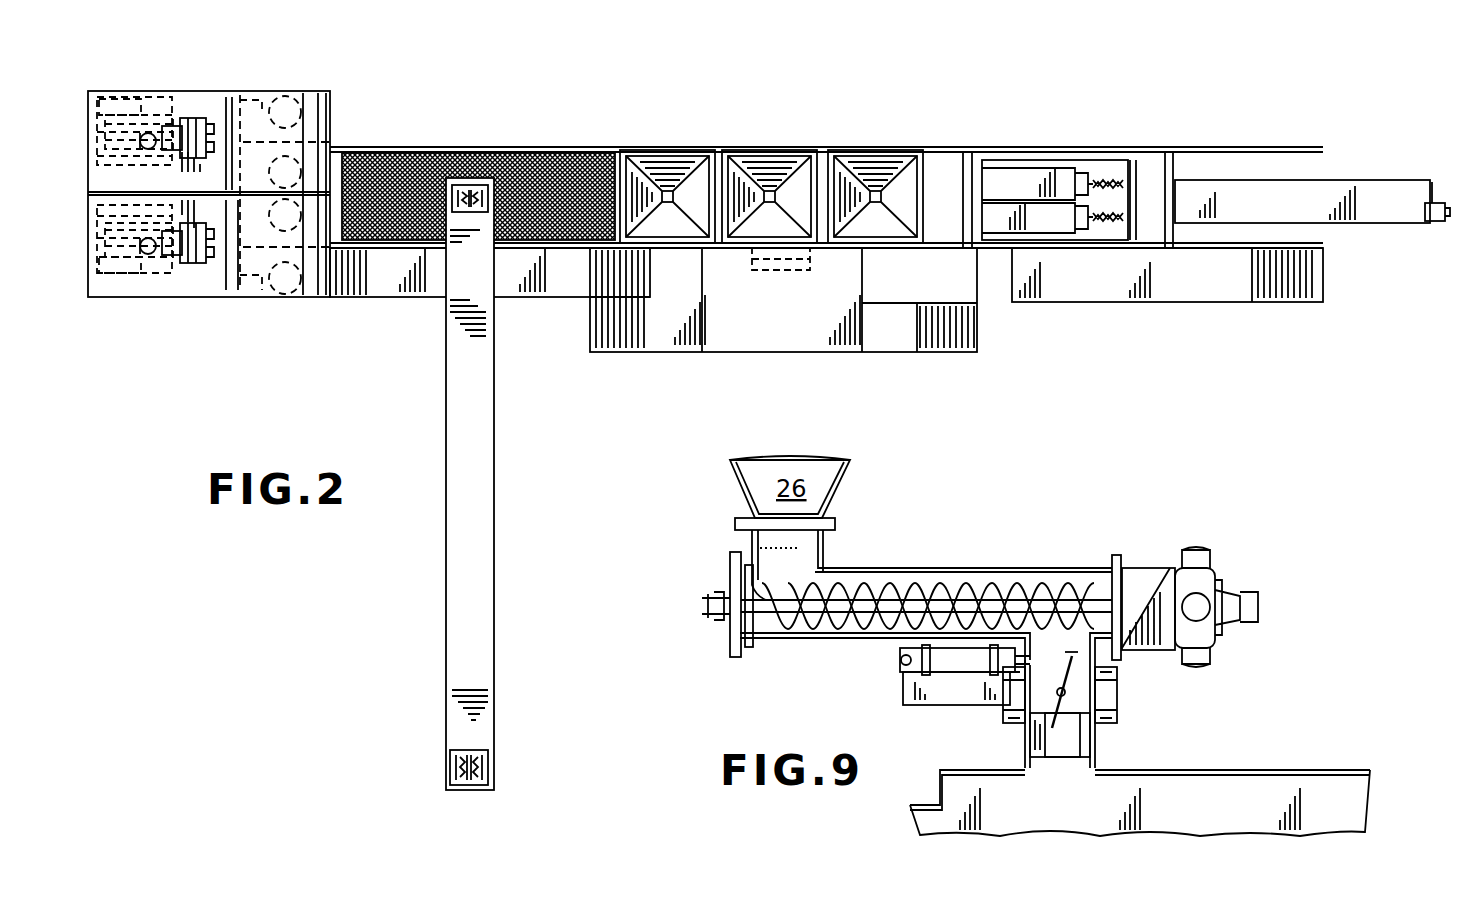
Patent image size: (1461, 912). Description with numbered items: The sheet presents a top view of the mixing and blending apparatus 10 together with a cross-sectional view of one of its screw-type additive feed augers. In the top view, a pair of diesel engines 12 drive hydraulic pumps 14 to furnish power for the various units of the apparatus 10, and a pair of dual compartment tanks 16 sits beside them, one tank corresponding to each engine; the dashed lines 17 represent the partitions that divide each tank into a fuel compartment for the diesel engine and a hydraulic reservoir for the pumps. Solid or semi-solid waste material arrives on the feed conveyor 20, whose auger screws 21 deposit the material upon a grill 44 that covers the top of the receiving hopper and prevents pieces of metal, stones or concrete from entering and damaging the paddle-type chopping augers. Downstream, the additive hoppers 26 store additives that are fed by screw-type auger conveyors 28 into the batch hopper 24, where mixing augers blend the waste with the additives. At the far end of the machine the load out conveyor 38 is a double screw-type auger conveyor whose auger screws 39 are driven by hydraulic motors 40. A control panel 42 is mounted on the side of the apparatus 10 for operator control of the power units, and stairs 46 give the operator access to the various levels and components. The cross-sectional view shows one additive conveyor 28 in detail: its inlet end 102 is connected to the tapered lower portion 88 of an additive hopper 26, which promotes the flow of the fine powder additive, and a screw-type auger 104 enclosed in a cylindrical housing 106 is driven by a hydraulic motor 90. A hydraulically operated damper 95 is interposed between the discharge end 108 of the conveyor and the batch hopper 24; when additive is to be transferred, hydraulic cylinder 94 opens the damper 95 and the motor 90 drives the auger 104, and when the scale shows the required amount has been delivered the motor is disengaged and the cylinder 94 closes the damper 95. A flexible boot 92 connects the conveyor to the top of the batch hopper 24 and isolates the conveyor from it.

In FIG. 2, the apparatus 10 is at (394, 372).
In FIG. 2, the diesel engines 12 is at (172, 110).
In FIG. 2, the hydraulic pumps 14 is at (202, 122).
In FIG. 2, the dual compartment tanks 16 is at (292, 100).
In FIG. 2, the dashed lines 17 is at (318, 115).
In FIG. 2, the feed conveyor 20 is at (488, 478).
In FIG. 2, the auger screws 21 is at (450, 768).
In FIG. 9, the batch hopper 24 is at (1265, 770).
In FIG. 2, the additive hoppers 26 is at (683, 152).
In FIG. 9, the screw-type auger conveyors 28 is at (1030, 546).
In FIG. 2, the load out conveyor 38 is at (1352, 184).
In FIG. 2, the auger screws 39 is at (1100, 178).
In FIG. 2, the hydraulic motors 40 is at (1440, 203).
In FIG. 2, the control panel 42 is at (776, 272).
In FIG. 2, the grill 44 is at (396, 150).
In FIG. 2, the stairs 46 is at (621, 354).
In FIG. 9, the tapered lower portion 88 is at (848, 487).
In FIG. 9, the hydraulic motor 90 is at (1222, 580).
In FIG. 9, the flexible boot 92 is at (1100, 745).
In FIG. 9, the hydraulic cylinder 94 is at (945, 690).
In FIG. 9, the damper 95 is at (1062, 760).
In FIG. 9, the inlet end 102 is at (772, 650).
In FIG. 9, the screw-type auger 104 is at (863, 634).
In FIG. 9, the cylindrical housing 106 is at (948, 570).
In FIG. 9, the discharge end 108 is at (1119, 555).